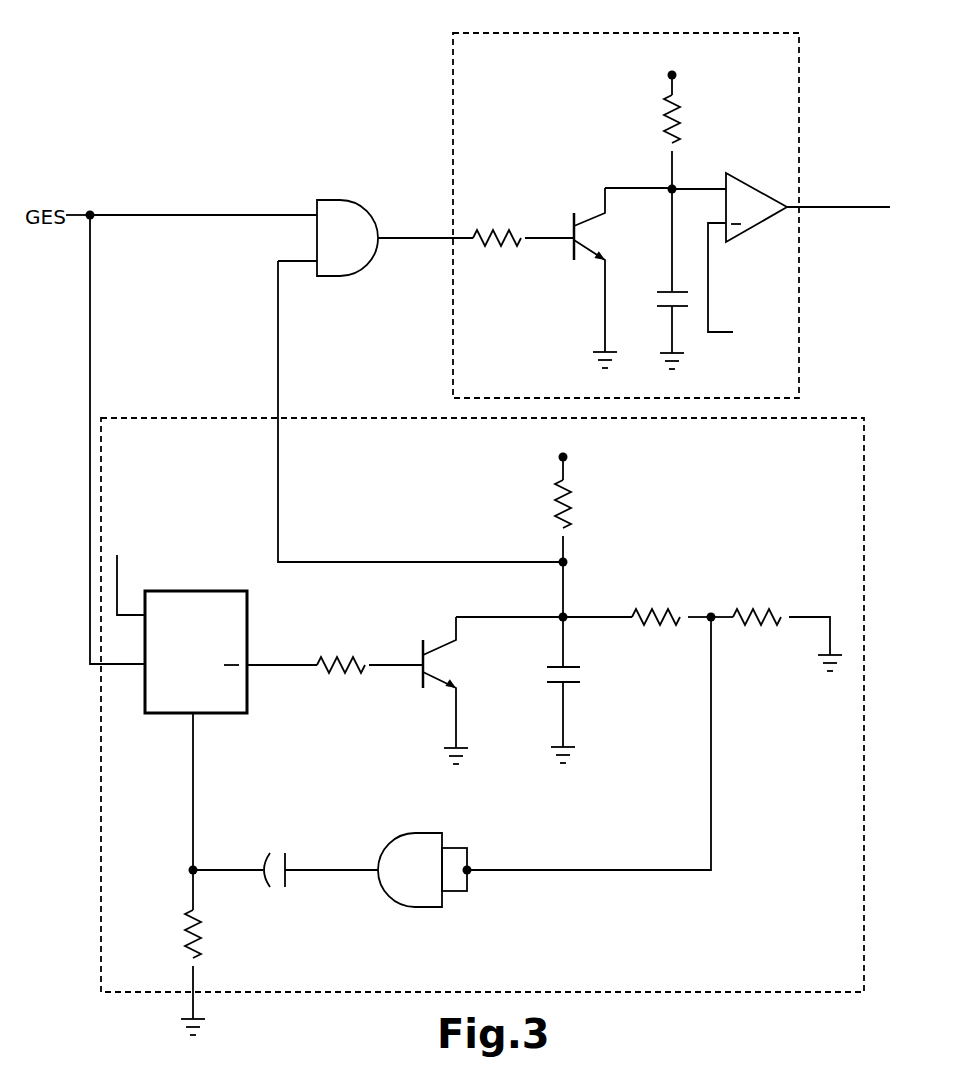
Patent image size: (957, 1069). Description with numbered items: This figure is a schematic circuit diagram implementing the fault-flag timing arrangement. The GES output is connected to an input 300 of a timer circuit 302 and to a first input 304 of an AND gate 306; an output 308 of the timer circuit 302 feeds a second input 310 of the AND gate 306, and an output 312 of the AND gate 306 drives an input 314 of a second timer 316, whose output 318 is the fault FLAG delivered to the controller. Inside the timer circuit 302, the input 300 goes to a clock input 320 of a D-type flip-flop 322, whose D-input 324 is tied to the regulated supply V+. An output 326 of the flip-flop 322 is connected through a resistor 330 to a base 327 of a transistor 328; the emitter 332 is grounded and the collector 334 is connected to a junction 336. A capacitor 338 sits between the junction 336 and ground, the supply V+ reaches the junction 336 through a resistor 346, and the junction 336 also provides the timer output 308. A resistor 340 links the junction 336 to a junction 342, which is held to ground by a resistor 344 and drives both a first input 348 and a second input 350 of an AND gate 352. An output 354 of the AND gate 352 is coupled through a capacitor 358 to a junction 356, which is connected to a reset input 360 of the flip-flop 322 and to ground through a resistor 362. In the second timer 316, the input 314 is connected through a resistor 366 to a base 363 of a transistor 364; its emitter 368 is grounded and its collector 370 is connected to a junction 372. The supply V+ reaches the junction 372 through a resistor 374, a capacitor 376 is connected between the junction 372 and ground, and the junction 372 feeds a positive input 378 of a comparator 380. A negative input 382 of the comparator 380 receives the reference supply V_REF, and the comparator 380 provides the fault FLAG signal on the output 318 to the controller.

The input of timer circuit 300 is at (101, 664).
The timer circuit 302 is at (101, 778).
The first input of AND gate 304 is at (316, 213).
The AND gate 306 is at (345, 215).
The output of timer 308 is at (278, 418).
The second input of AND gate 310 is at (316, 262).
The output of AND gate 312 is at (380, 242).
The input of timer 314 is at (450, 238).
The timer 316 is at (712, 32).
The output of timer 318 is at (795, 208).
The clock input 320 is at (144, 670).
The D-type flip-flop 322 is at (218, 615).
The D-input 324 is at (140, 612).
The output of flip-flop 326 is at (250, 661).
The base of transistor 327 is at (420, 665).
The transistor 328 is at (426, 670).
The resistor 330 is at (343, 660).
The emitter of transistor 332 is at (436, 682).
The collector of transistor 334 is at (445, 640).
The junction 336 is at (568, 613).
The capacitor 338 is at (578, 673).
The resistor 340 is at (670, 607).
The junction 342 is at (715, 622).
The resistor 344 is at (768, 607).
The resistor 346 is at (562, 510).
The first input of AND gate 348 is at (447, 845).
The second input of AND gate 350 is at (447, 895).
The AND gate 352 is at (403, 872).
The output of AND gate 354 is at (380, 878).
The junction 356 is at (190, 870).
The capacitor 358 is at (276, 852).
The reset input 360 is at (195, 718).
The resistor 362 is at (190, 946).
The base of transistor 363 is at (572, 238).
The transistor 364 is at (562, 214).
The resistor 366 is at (497, 234).
The emitter of transistor 368 is at (585, 256).
The collector of transistor 370 is at (557, 238).
The junction 372 is at (668, 187).
The resistor 374 is at (678, 122).
The capacitor 376 is at (655, 292).
The positive input of comparator 378 is at (723, 188).
The comparator 380 is at (766, 241).
The negative input of comparator 382 is at (722, 226).